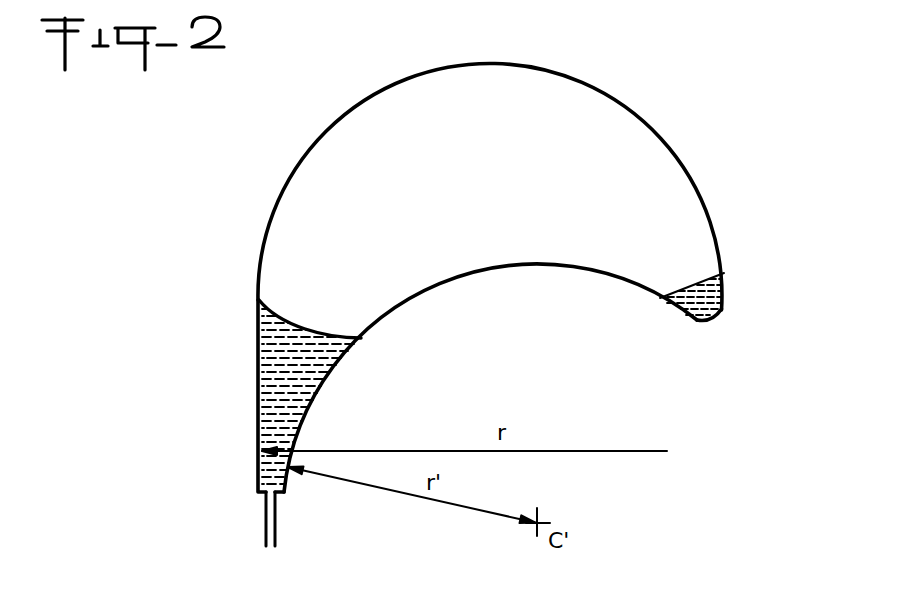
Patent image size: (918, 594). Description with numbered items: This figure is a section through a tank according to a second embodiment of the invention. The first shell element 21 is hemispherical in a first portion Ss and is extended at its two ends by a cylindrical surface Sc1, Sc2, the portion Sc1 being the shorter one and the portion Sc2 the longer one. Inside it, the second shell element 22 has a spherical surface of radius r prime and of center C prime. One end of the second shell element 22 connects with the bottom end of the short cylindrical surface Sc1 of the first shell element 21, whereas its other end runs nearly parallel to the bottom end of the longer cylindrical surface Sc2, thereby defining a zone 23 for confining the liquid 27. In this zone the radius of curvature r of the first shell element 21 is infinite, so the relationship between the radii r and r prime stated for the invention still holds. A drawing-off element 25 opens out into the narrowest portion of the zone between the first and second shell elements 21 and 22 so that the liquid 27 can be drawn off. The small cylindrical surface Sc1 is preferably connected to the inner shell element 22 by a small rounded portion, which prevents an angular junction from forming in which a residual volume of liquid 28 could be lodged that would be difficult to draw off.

The first shell element 21 is at (686, 169).
The second shell element 22 is at (608, 280).
The zone for confining the liquid 23 is at (258, 480).
The drawing-off element 25 is at (266, 541).
The liquid 27 is at (340, 362).
The residual volume of liquid 28 is at (724, 273).
The hemispherical first portion Ss is at (258, 255).
The short cylindrical surface Sc1 is at (715, 318).
The long cylindrical surface Sc2 is at (258, 410).